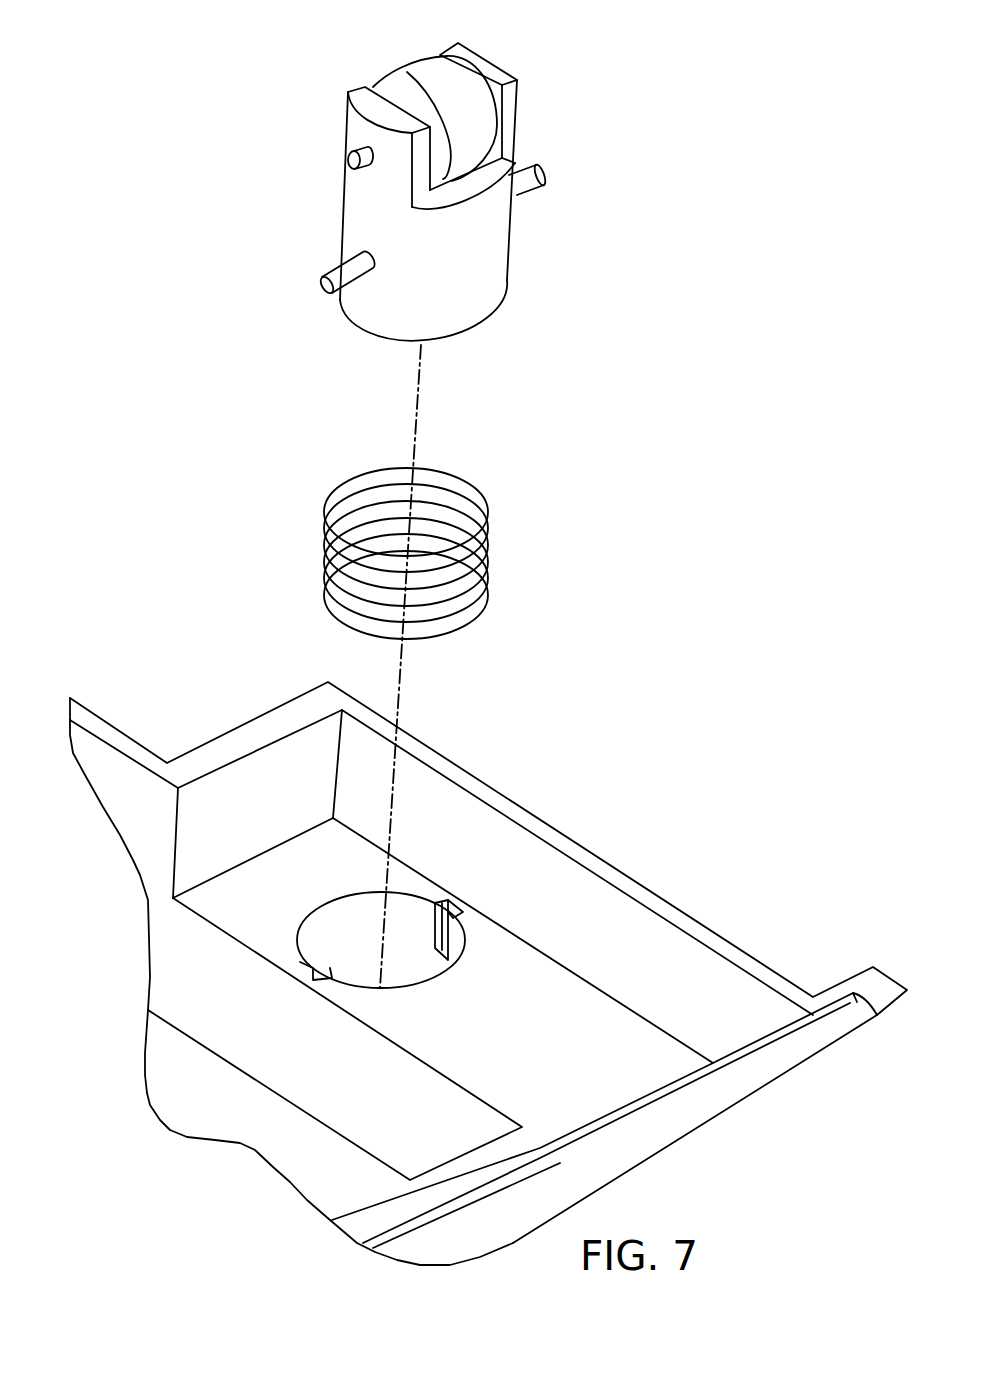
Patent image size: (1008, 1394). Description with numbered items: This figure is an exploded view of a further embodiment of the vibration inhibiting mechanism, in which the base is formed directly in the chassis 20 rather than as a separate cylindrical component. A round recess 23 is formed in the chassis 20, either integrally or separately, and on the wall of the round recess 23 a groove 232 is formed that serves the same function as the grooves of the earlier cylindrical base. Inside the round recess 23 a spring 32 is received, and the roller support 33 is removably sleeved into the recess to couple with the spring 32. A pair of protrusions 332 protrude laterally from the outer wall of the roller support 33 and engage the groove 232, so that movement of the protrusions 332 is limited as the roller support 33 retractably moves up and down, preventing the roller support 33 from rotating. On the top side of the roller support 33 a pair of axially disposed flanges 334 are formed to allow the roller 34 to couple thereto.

The chassis 20 is at (623, 917).
The round recess 23 is at (343, 903).
The groove 232 is at (455, 923).
The spring 32 is at (487, 565).
The roller support 33 is at (493, 272).
The protrusions 332 is at (340, 272).
The flanges 334 is at (478, 62).
The roller 34 is at (430, 87).